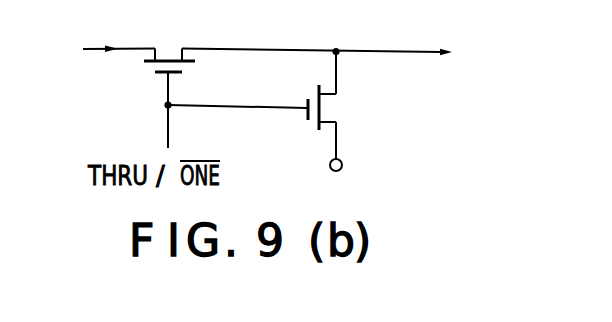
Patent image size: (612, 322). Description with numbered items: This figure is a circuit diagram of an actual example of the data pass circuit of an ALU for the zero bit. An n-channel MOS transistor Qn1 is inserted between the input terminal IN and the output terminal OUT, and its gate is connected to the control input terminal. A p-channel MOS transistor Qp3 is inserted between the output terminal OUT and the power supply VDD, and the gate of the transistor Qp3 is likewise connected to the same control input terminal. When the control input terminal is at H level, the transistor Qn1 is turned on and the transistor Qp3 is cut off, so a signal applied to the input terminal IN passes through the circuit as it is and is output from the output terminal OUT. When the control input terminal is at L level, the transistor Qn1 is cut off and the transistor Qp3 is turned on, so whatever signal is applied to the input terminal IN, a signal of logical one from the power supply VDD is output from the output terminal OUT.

The n-channel MOS transistor Qn1 is at (168, 50).
The p-channel MOS transistor Qp3 is at (319, 109).
The input terminal IN is at (101, 50).
The output terminal OUT is at (344, 54).
The power supply VDD is at (335, 188).